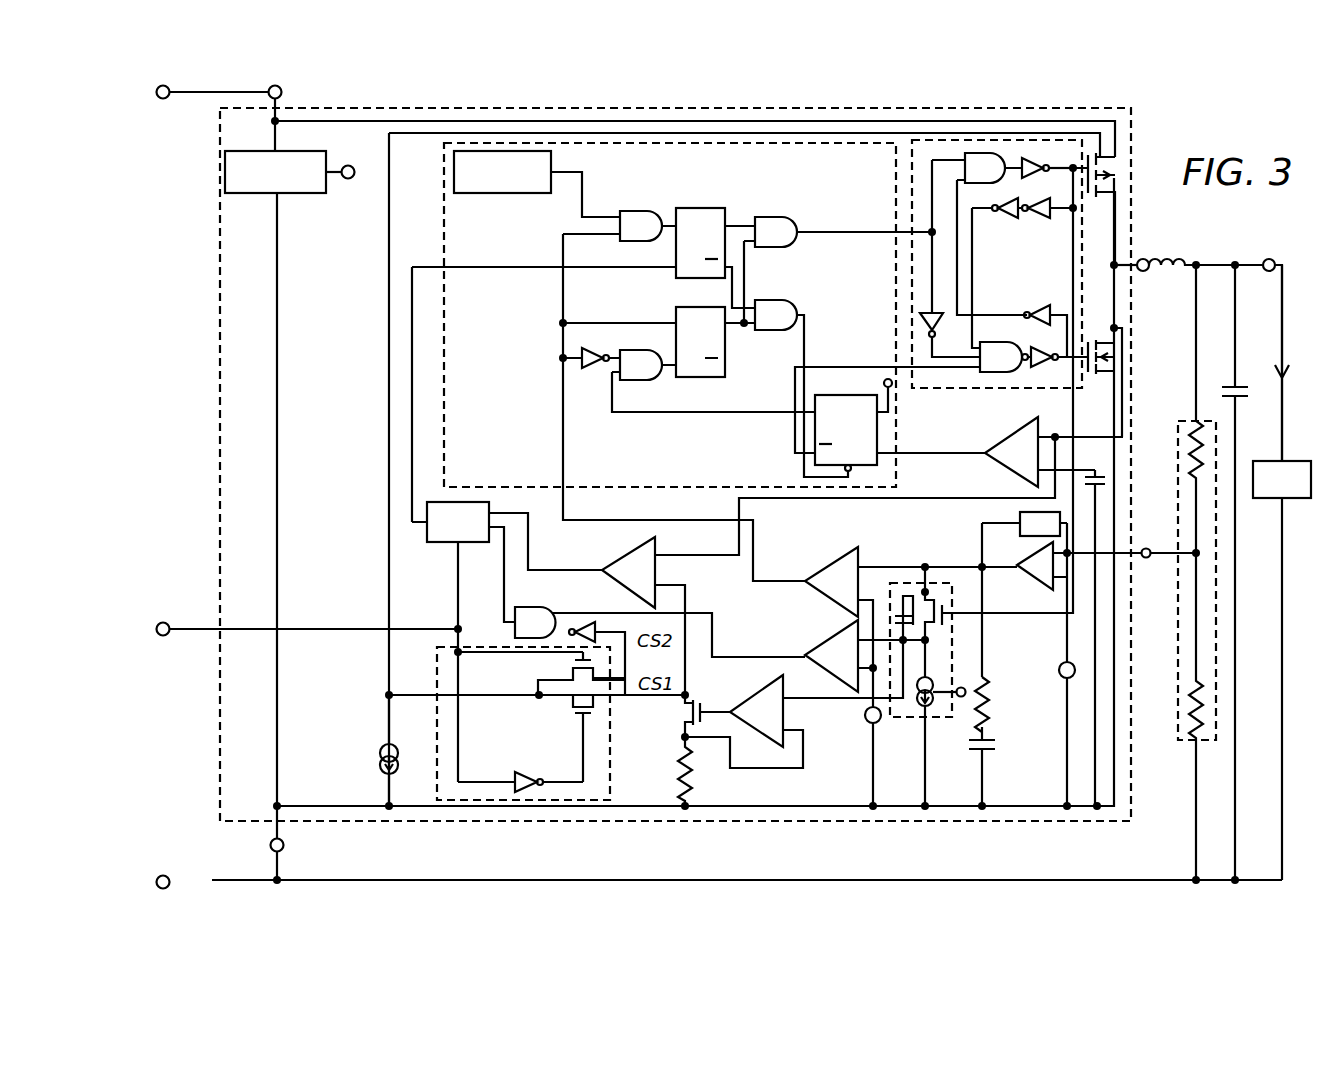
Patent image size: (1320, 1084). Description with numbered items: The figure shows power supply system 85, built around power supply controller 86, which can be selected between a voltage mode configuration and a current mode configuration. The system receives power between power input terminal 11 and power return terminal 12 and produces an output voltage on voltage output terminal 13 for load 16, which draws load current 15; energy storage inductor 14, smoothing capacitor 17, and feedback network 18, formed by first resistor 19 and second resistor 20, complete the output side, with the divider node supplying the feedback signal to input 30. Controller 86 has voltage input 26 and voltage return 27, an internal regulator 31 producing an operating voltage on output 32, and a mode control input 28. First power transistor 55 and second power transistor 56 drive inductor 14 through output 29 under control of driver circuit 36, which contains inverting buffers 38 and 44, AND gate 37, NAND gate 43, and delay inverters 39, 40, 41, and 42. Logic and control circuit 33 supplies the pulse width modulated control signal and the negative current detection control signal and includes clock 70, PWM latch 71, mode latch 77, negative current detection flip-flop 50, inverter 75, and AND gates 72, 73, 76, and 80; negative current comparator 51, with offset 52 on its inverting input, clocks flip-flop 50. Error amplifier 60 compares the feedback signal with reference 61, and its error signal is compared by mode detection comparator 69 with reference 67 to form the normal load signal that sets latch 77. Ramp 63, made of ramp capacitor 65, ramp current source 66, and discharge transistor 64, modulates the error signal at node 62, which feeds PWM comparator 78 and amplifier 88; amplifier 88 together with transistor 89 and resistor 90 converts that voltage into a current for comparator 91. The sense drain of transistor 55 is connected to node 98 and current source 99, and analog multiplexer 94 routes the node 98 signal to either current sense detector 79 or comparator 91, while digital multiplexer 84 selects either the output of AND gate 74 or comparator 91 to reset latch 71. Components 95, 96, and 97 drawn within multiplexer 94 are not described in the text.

The power input terminal 11 is at (165, 100).
The power return terminal 12 is at (167, 876).
The voltage output terminal 13 is at (1276, 258).
The energy storage inductor 14 is at (1198, 258).
The load current 15 is at (1288, 380).
The load 16 is at (1290, 505).
The smoothing capacitor 17 is at (1242, 385).
The feedback network 18 is at (1178, 645).
The first resistor 19 is at (1195, 425).
The second resistor 20 is at (1192, 735).
The voltage input 26 is at (282, 87).
The voltage return 27 is at (284, 845).
The mode control input 28 is at (166, 622).
The output 29 is at (1148, 256).
The input 30 is at (1148, 548).
The internal regulator 31 is at (298, 195).
The output 32 is at (355, 166).
The logic and control circuit 33 is at (665, 488).
The driver circuit 36 is at (932, 140).
The AND gate 37 is at (1005, 148).
The inverting buffer 38 is at (1050, 150).
The delay inverter 39 is at (1003, 218).
The delay inverter 40 is at (1040, 218).
The delay inverter 41 is at (1040, 308).
The delay inverter 42 is at (925, 315).
The NAND gate 43 is at (992, 375).
The inverting buffer 44 is at (1040, 372).
The negative current detection flip-flop 50 is at (880, 465).
The negative current comparator 51 is at (1000, 478).
The offset 52 is at (1105, 478).
The first power transistor 55 is at (1110, 160).
The second power transistor 56 is at (1092, 340).
The error amplifier 60 is at (1025, 580).
The reference 61 is at (1059, 672).
The node 62 is at (900, 630).
The ramp 63 is at (912, 720).
The discharge transistor 64 is at (937, 598).
The ramp capacitor 65 is at (905, 612).
The ramp current source 66 is at (932, 680).
The reference 67 is at (866, 722).
The mode detection comparator 69 is at (830, 560).
The clock 70 is at (505, 195).
The PWM latch 71 is at (700, 208).
The AND gate 72 is at (775, 215).
The AND gate 73 is at (642, 210).
The AND gate 74 is at (532, 606).
The inverter 75 is at (598, 352).
The AND gate 76 is at (638, 380).
The mode latch 77 is at (716, 375).
The PWM comparator 78 is at (820, 643).
The current sense detector 79 is at (588, 625).
The AND gate 80 is at (775, 298).
The digital multiplexer 84 is at (440, 545).
The power supply system 85 is at (1319, 855).
The power supply controller 86 is at (219, 293).
The amplifier 88 is at (758, 698).
The transistor 89 is at (682, 718).
The resistor 90 is at (680, 770).
The comparator 91 is at (612, 560).
The analog multiplexer 94 is at (572, 805).
The inverter 95 is at (525, 775).
The transistor 96 is at (568, 703).
The transistor 97 is at (560, 662).
The node 98 is at (386, 690).
The current source 99 is at (382, 750).